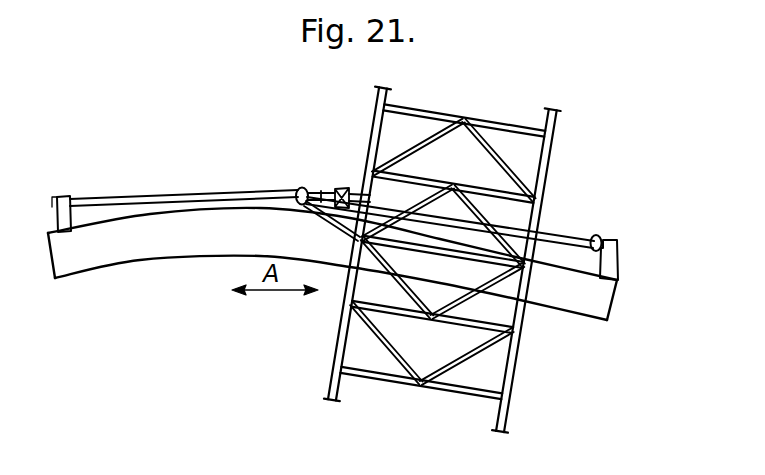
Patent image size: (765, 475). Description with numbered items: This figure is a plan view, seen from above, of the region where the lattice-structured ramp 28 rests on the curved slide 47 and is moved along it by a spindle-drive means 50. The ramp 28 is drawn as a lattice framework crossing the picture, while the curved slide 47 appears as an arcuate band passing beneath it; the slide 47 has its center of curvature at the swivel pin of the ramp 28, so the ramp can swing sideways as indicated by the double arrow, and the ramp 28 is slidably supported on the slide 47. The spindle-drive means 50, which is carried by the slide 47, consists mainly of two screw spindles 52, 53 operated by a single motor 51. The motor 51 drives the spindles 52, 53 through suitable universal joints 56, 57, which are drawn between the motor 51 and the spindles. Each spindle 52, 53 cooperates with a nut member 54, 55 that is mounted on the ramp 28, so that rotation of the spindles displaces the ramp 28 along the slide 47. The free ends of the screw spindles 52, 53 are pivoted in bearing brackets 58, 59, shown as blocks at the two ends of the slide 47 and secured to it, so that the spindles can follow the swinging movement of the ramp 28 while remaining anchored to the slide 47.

The ramp proper 28 is at (332, 385).
The curved slide 47 is at (140, 252).
The spindle-drive means 50 is at (226, 180).
The motor 51 is at (360, 196).
The spindle 52 is at (553, 237).
The spindle 53 is at (157, 196).
The nut member 54 is at (599, 238).
The nut member 55 is at (298, 189).
The universal joint 56 is at (358, 197).
The universal joint 57 is at (331, 190).
The bearing bracket 58 is at (618, 264).
The bearing bracket 59 is at (50, 217).